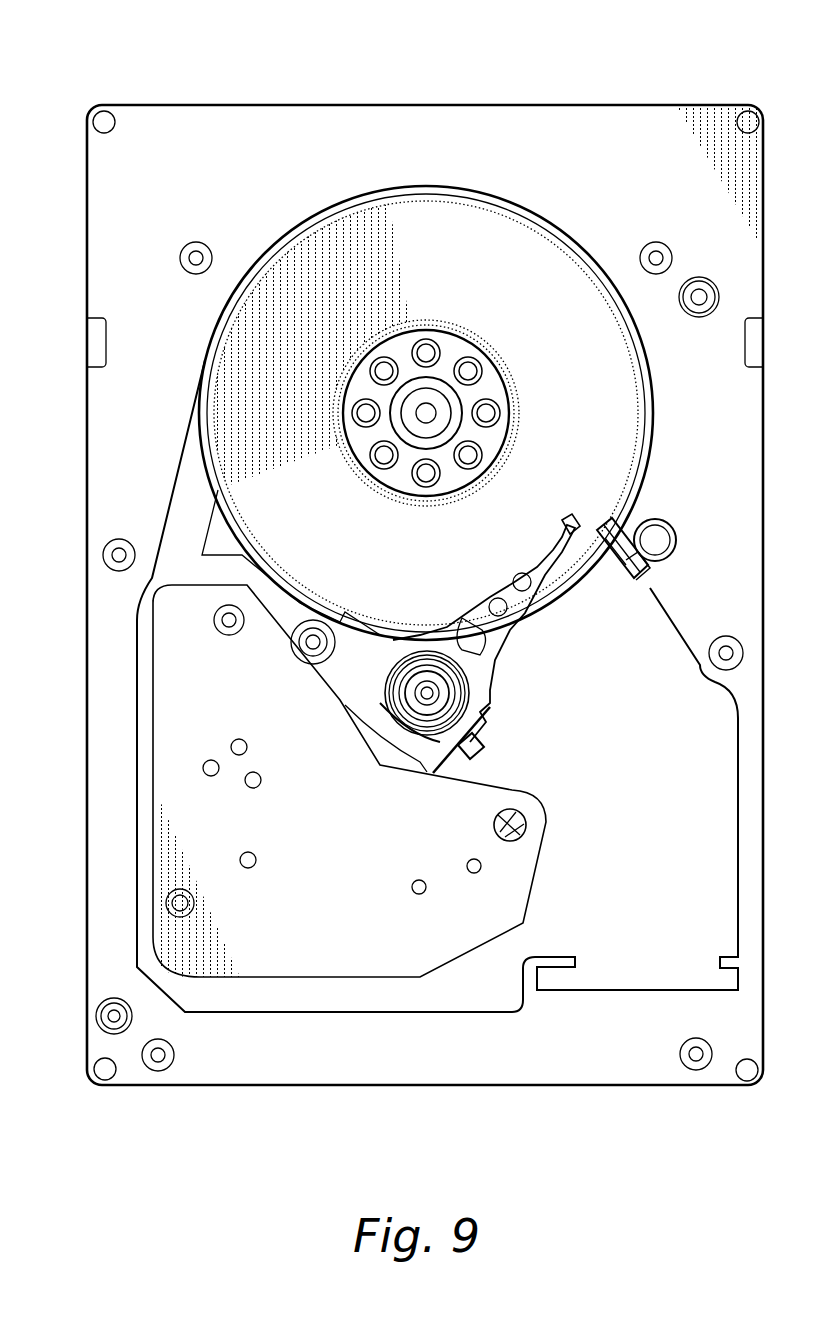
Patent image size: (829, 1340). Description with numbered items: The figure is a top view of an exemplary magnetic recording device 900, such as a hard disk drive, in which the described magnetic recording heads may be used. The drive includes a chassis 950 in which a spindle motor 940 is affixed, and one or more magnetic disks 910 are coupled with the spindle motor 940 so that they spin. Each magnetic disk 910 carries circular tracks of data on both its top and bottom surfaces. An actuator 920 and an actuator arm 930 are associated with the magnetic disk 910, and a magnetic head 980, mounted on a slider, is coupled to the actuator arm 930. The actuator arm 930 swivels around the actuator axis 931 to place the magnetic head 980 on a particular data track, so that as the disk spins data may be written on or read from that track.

The magnetic recording device 900 is at (658, 42).
The chassis 950 is at (200, 106).
The magnetic disk 910 is at (510, 243).
The spindle motor 940 is at (430, 410).
The actuator arm 930 is at (505, 590).
The actuator axis 931 is at (433, 698).
The magnetic head 980 is at (564, 520).
The actuator 920 is at (522, 880).